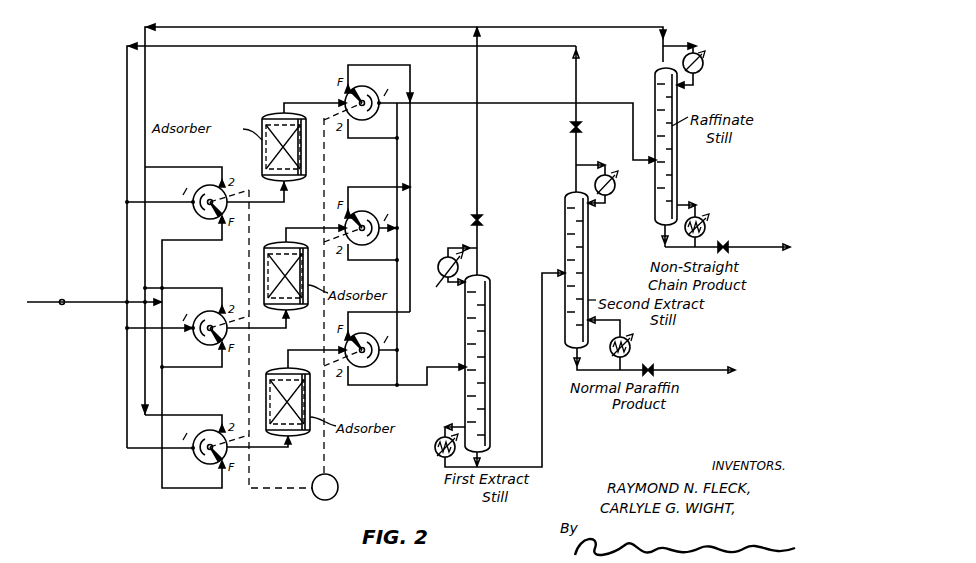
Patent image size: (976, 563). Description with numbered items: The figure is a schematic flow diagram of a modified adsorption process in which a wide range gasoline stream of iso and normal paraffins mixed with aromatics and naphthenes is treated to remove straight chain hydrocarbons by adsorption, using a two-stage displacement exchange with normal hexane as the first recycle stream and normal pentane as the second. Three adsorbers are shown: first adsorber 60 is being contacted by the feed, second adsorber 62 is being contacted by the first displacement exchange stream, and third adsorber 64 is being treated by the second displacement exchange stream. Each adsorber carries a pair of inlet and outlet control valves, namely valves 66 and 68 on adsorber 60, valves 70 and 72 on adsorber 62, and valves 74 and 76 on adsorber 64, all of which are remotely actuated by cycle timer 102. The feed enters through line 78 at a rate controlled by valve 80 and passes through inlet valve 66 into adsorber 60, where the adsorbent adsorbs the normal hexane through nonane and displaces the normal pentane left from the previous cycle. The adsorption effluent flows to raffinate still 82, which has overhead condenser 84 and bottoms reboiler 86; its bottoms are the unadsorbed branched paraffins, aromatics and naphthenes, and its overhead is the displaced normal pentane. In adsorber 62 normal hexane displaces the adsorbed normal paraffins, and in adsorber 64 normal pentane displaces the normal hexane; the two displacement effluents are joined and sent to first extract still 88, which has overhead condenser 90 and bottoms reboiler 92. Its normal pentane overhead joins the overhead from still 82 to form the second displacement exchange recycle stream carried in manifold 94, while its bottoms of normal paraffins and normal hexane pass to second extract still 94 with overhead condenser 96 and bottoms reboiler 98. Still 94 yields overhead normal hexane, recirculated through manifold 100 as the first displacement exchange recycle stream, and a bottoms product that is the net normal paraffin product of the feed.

The first adsorber 60 is at (280, 119).
The second adsorber 62 is at (282, 247).
The third adsorber 64 is at (270, 372).
The inlet control valve 66 is at (202, 186).
The outlet control valve 68 is at (356, 95).
The inlet control valve 70 is at (202, 312).
The outlet control valve 72 is at (352, 244).
The inlet control valve 74 is at (202, 464).
The outlet control valve 76 is at (354, 366).
The feed line 78 is at (50, 306).
The feed valve 80 is at (82, 288).
The raffinate still 82 is at (655, 76).
The overhead condenser 84 is at (705, 59).
The bottoms reboiler 86 is at (708, 226).
The first extract still 88 is at (487, 277).
The overhead condenser 90 is at (450, 275).
The bottoms reboiler 92 is at (435, 447).
The second extract still 94 is at (565, 223).
The overhead condenser 96 is at (609, 184).
The bottoms reboiler 98 is at (633, 346).
The manifold 100 is at (346, 46).
The cycle timer 102 is at (338, 483).